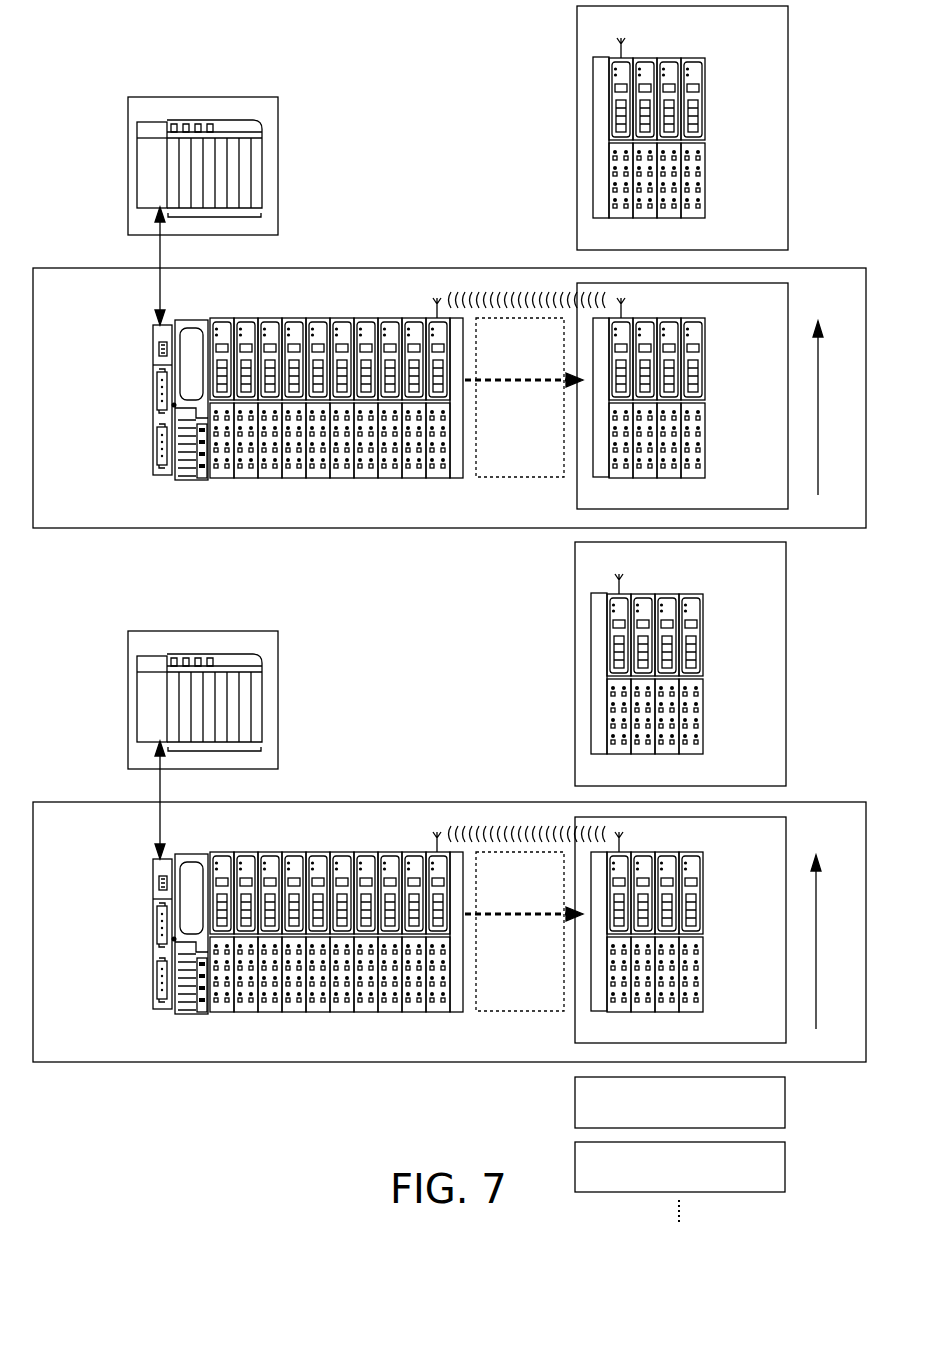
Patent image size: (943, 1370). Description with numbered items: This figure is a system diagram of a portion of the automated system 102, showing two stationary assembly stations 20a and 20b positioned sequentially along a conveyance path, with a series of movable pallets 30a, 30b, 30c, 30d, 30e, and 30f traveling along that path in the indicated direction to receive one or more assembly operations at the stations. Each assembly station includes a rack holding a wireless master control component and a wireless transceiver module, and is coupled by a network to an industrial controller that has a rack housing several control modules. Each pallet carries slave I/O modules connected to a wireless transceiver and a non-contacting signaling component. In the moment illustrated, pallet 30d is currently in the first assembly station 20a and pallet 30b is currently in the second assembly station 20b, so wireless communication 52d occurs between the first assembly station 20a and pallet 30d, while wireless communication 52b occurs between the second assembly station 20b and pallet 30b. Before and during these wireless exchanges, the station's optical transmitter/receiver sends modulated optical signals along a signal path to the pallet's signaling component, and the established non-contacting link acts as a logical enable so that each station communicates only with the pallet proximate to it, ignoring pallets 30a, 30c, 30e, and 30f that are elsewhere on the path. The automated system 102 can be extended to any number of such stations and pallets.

The automated system 102 is at (103, 54).
The second assembly station 20b is at (71, 528).
The first assembly station 20a is at (440, 936).
The wireless communication 52b is at (527, 280).
The wireless communication 52d is at (527, 811).
The movable pallet 30a is at (789, 21).
The movable pallet 30b is at (789, 301).
The movable pallet 30c is at (686, 664).
The movable pallet 30d is at (691, 930).
The movable pallet 30e is at (786, 1103).
The movable pallet 30f is at (786, 1167).